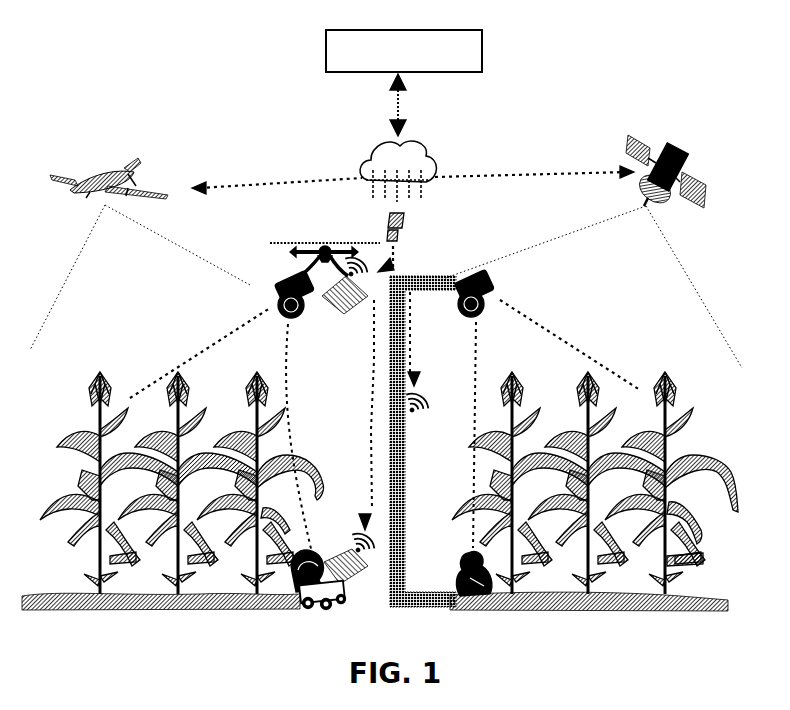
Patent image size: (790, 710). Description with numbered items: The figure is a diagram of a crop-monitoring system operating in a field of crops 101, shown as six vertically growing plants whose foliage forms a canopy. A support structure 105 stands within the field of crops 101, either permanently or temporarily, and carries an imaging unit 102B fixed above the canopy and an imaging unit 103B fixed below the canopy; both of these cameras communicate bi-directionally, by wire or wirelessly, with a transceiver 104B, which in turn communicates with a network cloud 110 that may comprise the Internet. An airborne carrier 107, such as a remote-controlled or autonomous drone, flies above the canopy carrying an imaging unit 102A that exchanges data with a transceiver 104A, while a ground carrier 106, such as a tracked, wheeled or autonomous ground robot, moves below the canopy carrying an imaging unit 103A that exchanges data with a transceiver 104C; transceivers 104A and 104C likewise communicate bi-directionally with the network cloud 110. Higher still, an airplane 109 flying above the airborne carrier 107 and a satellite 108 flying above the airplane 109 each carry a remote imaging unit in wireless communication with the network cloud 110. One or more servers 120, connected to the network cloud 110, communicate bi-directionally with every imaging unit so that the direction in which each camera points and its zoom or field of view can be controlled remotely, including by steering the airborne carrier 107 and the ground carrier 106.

The field of crops 101 is at (103, 372).
The imaging unit 102A is at (300, 288).
The imaging unit 102B is at (478, 276).
The imaging unit 103A is at (320, 556).
The imaging unit 103B is at (452, 584).
The transceiver 104A is at (347, 314).
The transceiver 104B is at (432, 412).
The transceiver 104C is at (345, 534).
The support structure 105 is at (422, 274).
The ground carrier 106 is at (327, 618).
The airborne carrier 107 is at (326, 244).
The satellite 108 is at (632, 165).
The airplane 109 is at (118, 162).
The network cloud 110 is at (366, 164).
The servers 120 is at (483, 62).